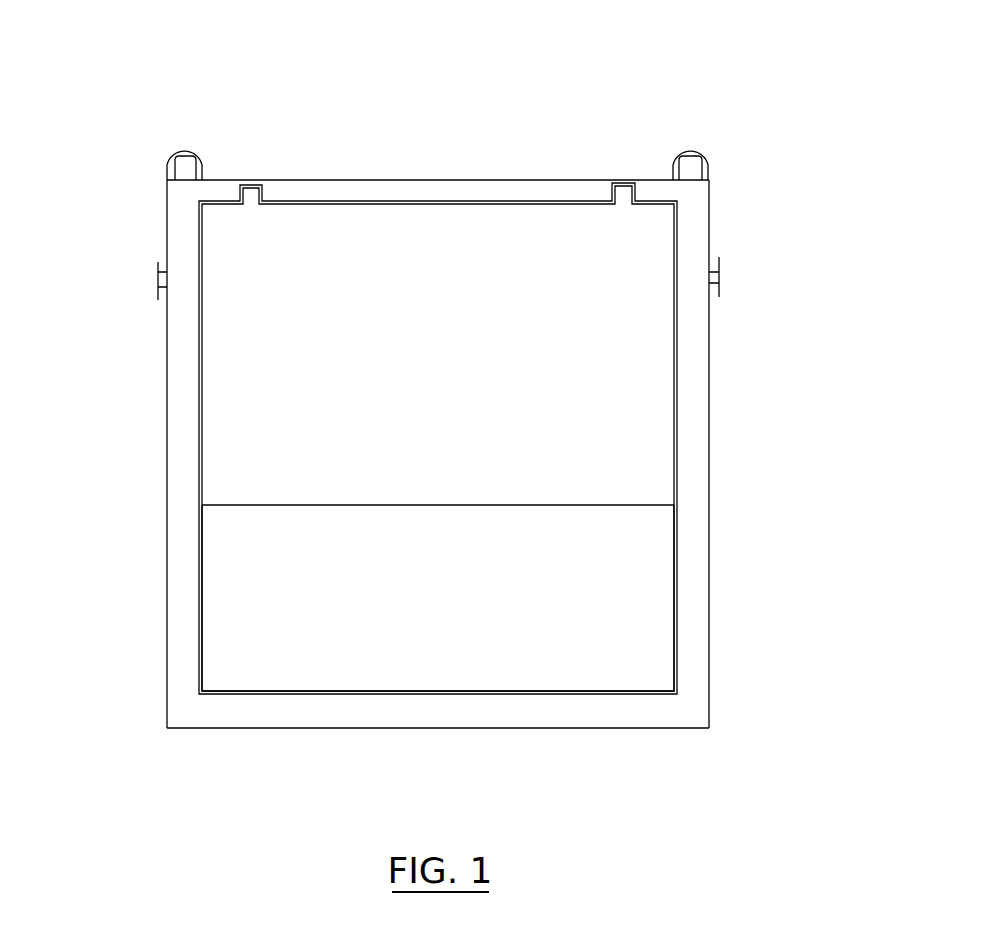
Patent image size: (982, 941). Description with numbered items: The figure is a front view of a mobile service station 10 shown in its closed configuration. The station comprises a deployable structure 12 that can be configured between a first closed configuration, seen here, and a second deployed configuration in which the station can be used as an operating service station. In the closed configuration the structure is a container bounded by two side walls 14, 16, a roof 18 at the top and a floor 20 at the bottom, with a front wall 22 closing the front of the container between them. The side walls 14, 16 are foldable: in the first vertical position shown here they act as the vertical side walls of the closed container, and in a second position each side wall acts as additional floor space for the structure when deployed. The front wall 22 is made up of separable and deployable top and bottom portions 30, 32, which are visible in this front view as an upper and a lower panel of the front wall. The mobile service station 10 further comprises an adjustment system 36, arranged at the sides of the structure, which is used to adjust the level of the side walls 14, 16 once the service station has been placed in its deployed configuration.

The mobile service station 10 is at (706, 122).
The deployable structure 12 is at (543, 203).
The side wall 14 is at (709, 350).
The side wall 16 is at (167, 378).
The roof 18 is at (375, 180).
The floor 20 is at (318, 728).
The front wall 22 is at (244, 283).
The top portion of front wall 30 is at (597, 247).
The bottom portion of front wall 32 is at (578, 612).
The adjustment system 36 is at (158, 284).